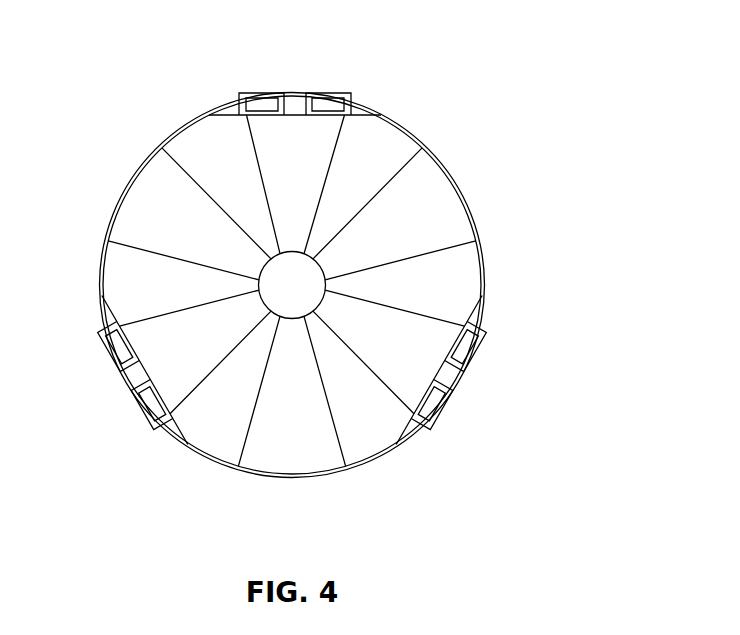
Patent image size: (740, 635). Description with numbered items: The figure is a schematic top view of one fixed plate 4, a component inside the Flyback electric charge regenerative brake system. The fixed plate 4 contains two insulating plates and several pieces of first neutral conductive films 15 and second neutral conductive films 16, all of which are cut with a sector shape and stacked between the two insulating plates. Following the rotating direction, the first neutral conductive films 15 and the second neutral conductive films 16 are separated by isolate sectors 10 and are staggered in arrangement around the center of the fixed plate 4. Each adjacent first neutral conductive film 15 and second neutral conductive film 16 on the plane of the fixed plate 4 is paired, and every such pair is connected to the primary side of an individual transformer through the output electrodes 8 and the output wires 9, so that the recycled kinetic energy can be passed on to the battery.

The fixed plate 4 is at (407, 65).
The output electrode 8 is at (247, 102).
The output wire 9 is at (269, 106).
The isolate sector 10 is at (296, 134).
The first neutral conductive film 15 is at (200, 128).
The second neutral conductive film 16 is at (386, 129).